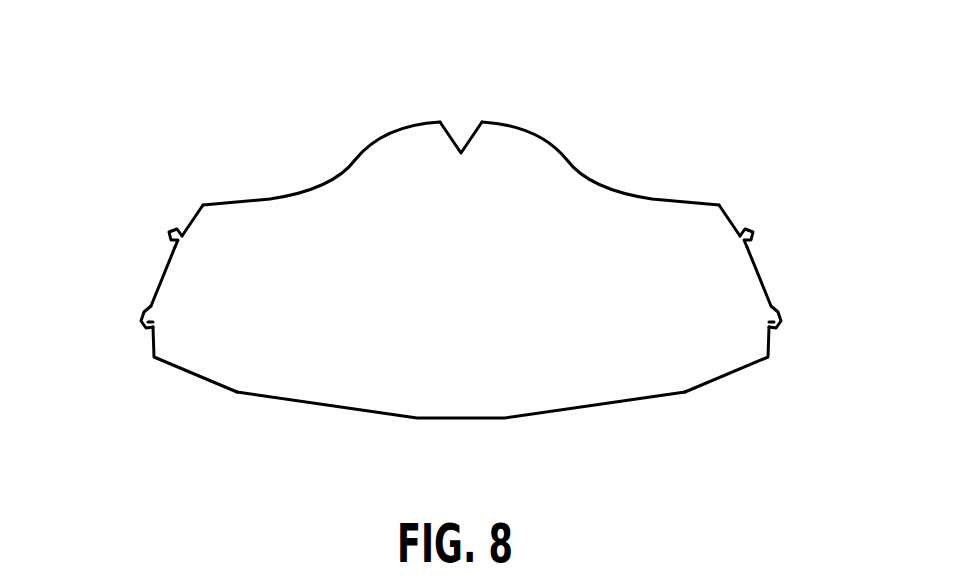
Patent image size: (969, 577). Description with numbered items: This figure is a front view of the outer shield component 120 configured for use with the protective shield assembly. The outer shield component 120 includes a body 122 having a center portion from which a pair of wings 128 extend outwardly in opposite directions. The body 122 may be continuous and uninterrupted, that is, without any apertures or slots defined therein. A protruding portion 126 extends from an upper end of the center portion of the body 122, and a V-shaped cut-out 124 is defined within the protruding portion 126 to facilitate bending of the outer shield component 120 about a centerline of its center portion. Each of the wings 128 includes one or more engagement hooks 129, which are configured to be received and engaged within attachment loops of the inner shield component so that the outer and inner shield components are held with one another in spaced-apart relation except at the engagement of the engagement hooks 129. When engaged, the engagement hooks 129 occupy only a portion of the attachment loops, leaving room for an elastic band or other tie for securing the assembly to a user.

The outer shield component 120 is at (461, 265).
The body 122 is at (502, 340).
The "V"-shaped cut-out 124 is at (461, 133).
The protruding portion 126 is at (536, 165).
The wings 128 is at (183, 307).
The engagement hooks 129 is at (145, 308).